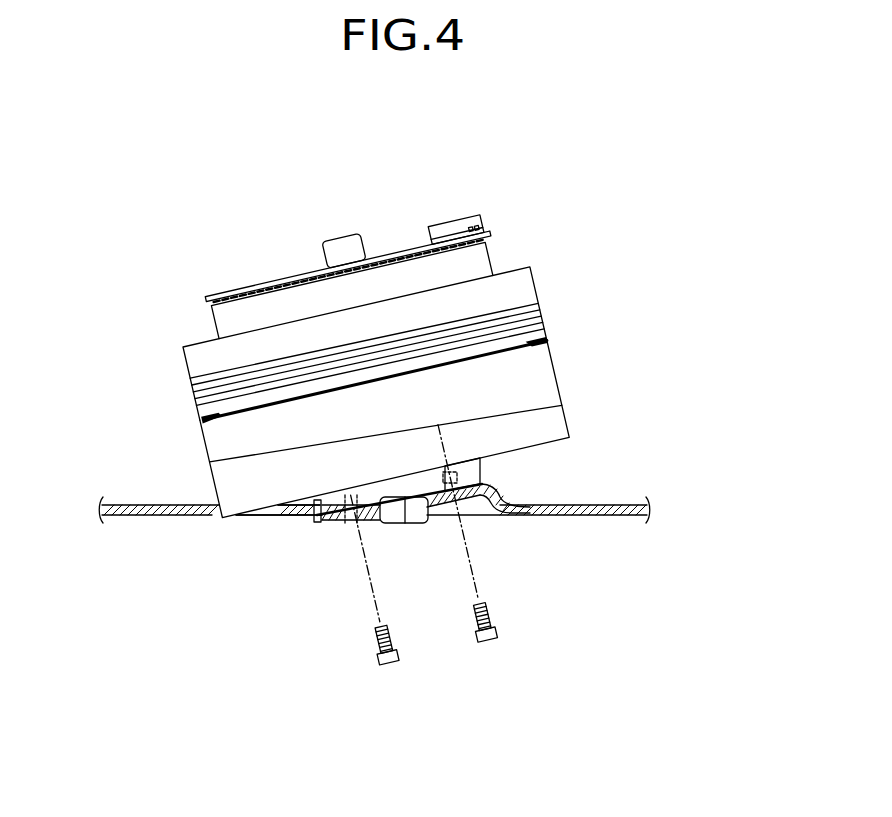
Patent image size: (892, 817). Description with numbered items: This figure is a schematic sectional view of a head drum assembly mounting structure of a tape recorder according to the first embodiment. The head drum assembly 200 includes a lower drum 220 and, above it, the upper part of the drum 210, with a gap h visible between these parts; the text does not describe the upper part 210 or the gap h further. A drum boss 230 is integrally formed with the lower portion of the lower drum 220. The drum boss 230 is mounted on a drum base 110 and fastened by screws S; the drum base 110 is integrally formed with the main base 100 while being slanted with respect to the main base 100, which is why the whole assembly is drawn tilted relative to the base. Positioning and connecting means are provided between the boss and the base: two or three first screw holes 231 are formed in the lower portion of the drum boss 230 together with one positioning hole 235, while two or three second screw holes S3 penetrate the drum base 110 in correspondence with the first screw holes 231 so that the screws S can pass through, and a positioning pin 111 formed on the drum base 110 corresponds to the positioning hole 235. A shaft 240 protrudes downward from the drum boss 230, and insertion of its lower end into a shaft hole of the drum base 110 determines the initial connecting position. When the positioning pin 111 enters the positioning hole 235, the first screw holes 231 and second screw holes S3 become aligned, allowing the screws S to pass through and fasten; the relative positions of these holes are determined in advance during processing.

The main base 100 is at (607, 516).
The drum base 110 is at (326, 520).
The positioning pin 111 is at (304, 506).
The head drum assembly 200 is at (655, 293).
The upper case 210 is at (510, 288).
The lower drum 220 is at (545, 380).
The drum boss 230 is at (397, 524).
The first screw holes 231 is at (468, 470).
The positioning hole 235 is at (320, 497).
The shaft 240 is at (343, 247).
The groove h is at (545, 345).
The screws S is at (389, 663).
The second screw holes S3 is at (357, 520).